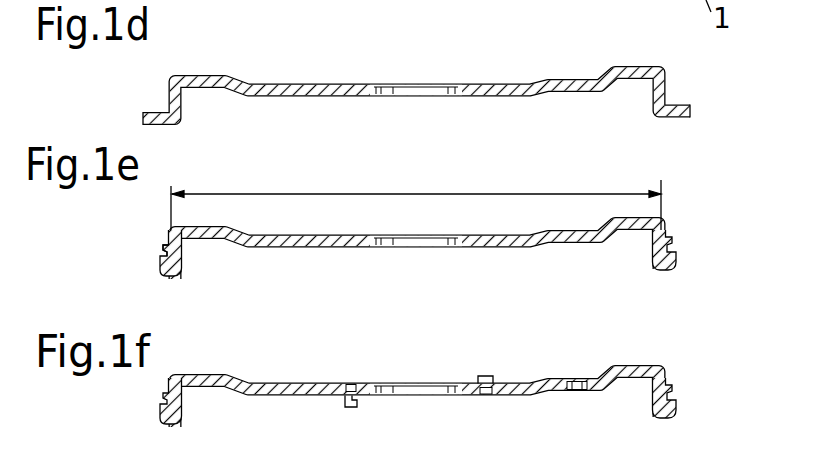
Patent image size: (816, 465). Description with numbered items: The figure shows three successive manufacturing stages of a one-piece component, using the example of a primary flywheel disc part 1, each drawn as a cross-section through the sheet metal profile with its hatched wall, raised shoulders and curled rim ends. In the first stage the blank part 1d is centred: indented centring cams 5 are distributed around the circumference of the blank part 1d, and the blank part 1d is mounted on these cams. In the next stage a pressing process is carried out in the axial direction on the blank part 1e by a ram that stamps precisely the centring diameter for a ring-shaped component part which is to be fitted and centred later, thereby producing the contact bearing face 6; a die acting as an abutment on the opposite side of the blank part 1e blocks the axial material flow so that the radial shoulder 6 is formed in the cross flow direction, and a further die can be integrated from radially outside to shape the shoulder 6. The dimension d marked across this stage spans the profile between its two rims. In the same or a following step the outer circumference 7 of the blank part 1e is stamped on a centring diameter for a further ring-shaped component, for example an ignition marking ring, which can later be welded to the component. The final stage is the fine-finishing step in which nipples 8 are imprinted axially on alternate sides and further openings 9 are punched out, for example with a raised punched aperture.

In FIG. 1d, the primary flywheel disc part 1 is at (702, 134).
In FIG. 1e, the primary flywheel disc part 1 is at (693, 275).
In FIG. 1f, the primary flywheel disc part 1 is at (699, 416).
In FIG. 1d, the blank part 1d is at (500, 88).
In FIG. 1e, the blank part 1e is at (335, 245).
In FIG. 1d, the centring cams 5 is at (171, 126).
In FIG. 1e, the contact bearing face 6 is at (164, 247).
In FIG. 1e, the outer circumference 7 is at (165, 277).
In FIG. 1f, the nipples 8 is at (345, 404).
In FIG. 1f, the openings 9 is at (574, 391).
In FIG. 1e, the rim diameter d is at (416, 199).